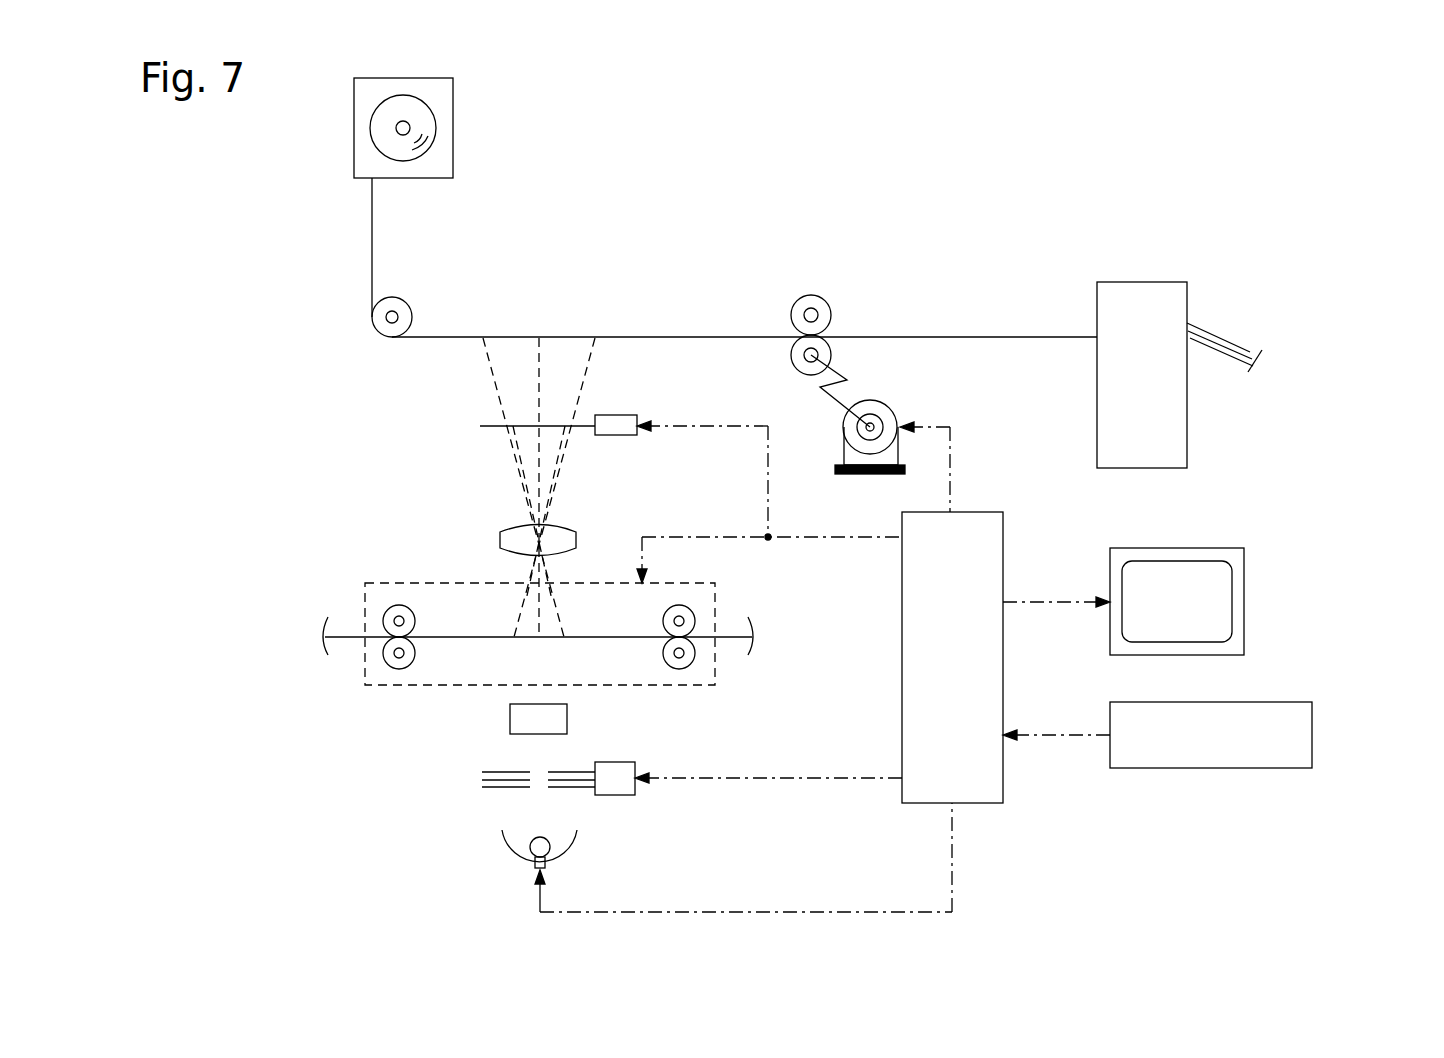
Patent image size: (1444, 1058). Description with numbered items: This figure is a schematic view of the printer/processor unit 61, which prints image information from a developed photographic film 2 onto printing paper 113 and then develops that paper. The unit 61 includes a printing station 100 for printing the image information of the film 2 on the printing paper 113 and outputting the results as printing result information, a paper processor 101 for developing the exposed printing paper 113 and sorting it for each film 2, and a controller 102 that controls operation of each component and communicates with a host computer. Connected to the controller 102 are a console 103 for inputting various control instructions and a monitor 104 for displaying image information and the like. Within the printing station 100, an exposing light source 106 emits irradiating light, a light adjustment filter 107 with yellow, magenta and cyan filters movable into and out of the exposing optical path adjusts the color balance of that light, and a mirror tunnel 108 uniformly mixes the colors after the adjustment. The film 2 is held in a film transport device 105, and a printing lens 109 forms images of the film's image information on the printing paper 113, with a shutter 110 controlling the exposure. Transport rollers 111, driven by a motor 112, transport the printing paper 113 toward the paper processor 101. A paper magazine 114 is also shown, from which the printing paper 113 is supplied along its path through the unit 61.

The photographic film 2 is at (727, 632).
The printer/processor unit 61 is at (322, 413).
The printing station 100 is at (678, 513).
The paper processor 101 is at (1150, 282).
The controller 102 is at (985, 512).
The console 103 is at (1312, 702).
The monitor 104 is at (1244, 548).
The film transport device 105 is at (703, 688).
The exposing light source 106 is at (513, 858).
The light adjustment filter 107 is at (580, 772).
The mirror tunnel 108 is at (510, 719).
The printing lens 109 is at (500, 537).
The shutter 110 is at (582, 425).
The transport rollers 111 is at (403, 305).
The motor 112 is at (890, 415).
The printing paper 113 is at (372, 242).
The paper magazine 114 is at (453, 127).